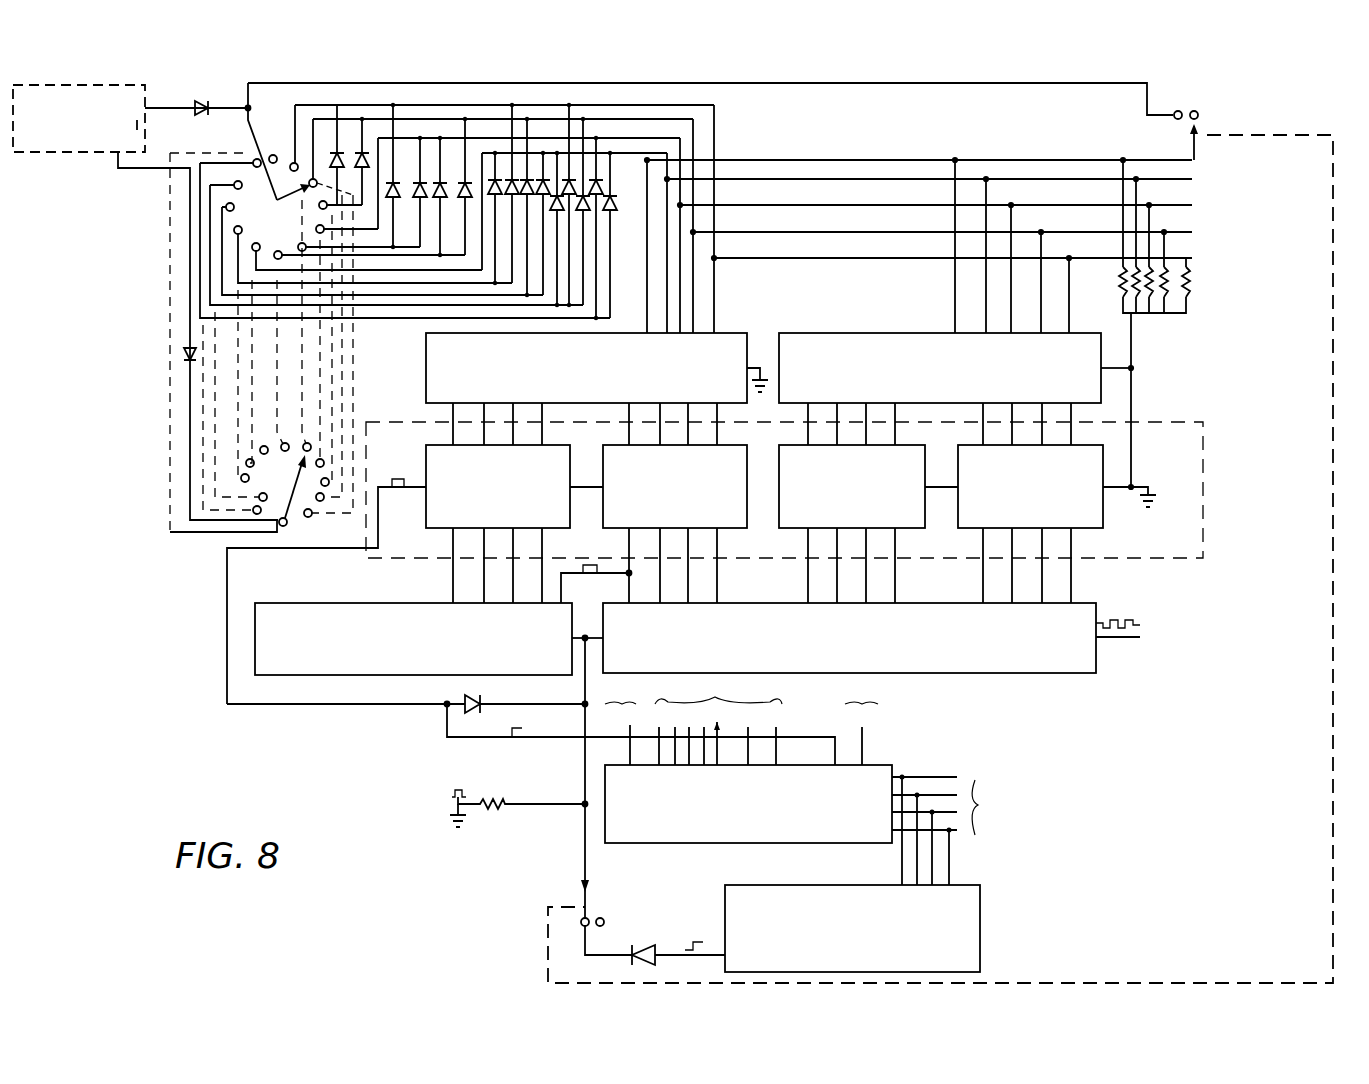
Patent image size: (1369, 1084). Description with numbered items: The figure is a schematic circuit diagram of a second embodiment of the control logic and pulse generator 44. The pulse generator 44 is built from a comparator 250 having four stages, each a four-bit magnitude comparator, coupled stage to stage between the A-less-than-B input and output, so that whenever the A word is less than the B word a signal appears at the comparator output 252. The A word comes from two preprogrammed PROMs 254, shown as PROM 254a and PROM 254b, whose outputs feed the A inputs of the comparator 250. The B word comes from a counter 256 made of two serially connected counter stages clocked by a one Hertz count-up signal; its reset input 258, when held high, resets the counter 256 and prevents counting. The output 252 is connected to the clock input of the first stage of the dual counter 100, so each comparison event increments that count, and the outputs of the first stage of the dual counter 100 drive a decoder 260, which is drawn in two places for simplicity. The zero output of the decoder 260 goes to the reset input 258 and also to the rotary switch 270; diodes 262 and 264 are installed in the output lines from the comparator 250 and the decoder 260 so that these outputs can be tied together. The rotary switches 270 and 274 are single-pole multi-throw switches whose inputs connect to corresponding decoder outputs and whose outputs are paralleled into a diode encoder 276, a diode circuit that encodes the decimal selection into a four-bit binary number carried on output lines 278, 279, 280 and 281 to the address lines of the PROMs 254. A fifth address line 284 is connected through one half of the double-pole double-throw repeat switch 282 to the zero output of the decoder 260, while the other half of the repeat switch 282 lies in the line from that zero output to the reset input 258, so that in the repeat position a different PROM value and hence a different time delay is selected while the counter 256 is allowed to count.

The pulse generator 44 is at (1200, 553).
The dual counter 100 is at (878, 765).
The comparator 250 is at (782, 486).
The comparator output 252 is at (426, 487).
The PROM 254 is at (1114, 357).
The first PROM 254a is at (426, 385).
The second PROM 254b is at (1101, 386).
The counter 256 is at (1088, 675).
The reset input 258 is at (572, 678).
The decoder 260 is at (80, 153).
The diode 262 is at (460, 698).
The diode 264 is at (645, 948).
The rotary switch 270 is at (262, 204).
The rotary switch 274 is at (277, 486).
The diode encoder 276 is at (627, 185).
The output line 278 is at (797, 178).
The output line 279 is at (847, 205).
The output line 280 is at (846, 234).
The output line 281 is at (893, 259).
The repeat switch 282 is at (1214, 145).
The fifth address line 284 is at (1057, 158).